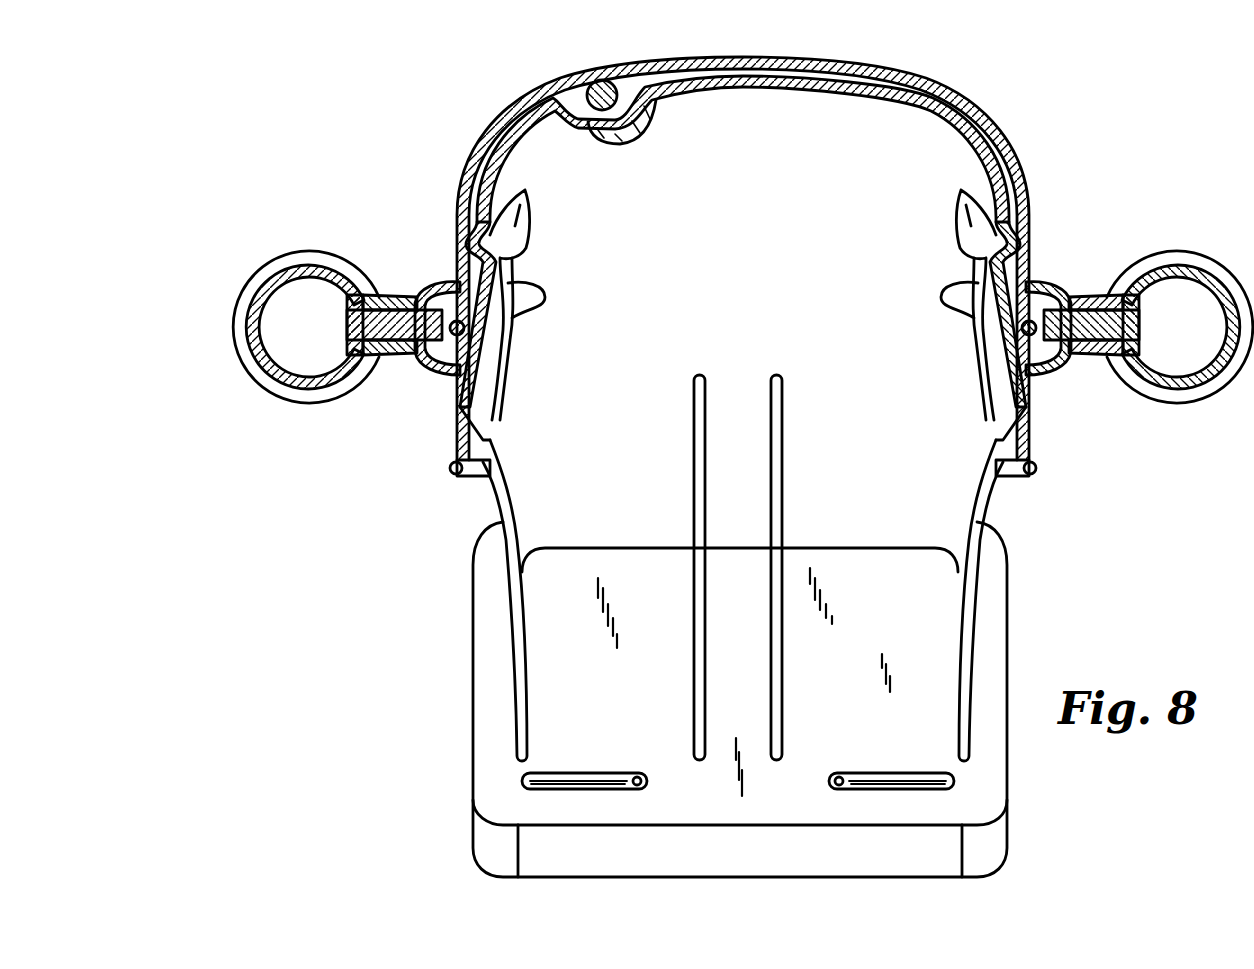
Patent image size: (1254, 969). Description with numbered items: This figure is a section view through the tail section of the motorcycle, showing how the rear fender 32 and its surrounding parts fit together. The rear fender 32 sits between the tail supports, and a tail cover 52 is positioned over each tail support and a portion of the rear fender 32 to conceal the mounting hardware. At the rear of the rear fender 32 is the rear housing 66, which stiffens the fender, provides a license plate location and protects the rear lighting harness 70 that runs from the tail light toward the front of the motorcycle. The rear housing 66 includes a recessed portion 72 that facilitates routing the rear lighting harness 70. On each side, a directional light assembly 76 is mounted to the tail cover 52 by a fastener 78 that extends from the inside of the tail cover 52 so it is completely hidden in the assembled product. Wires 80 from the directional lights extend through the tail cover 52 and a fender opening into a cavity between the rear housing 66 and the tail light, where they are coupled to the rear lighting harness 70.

The rear fender 32 is at (1012, 129).
The tail cover 52 is at (430, 282).
The rear housing 66 is at (950, 101).
The rear lighting harness 70 is at (598, 81).
The recessed portion 72 is at (582, 120).
The directional light assembly 76 is at (233, 404).
The fastener 78 is at (400, 332).
The wires 80 is at (505, 270).